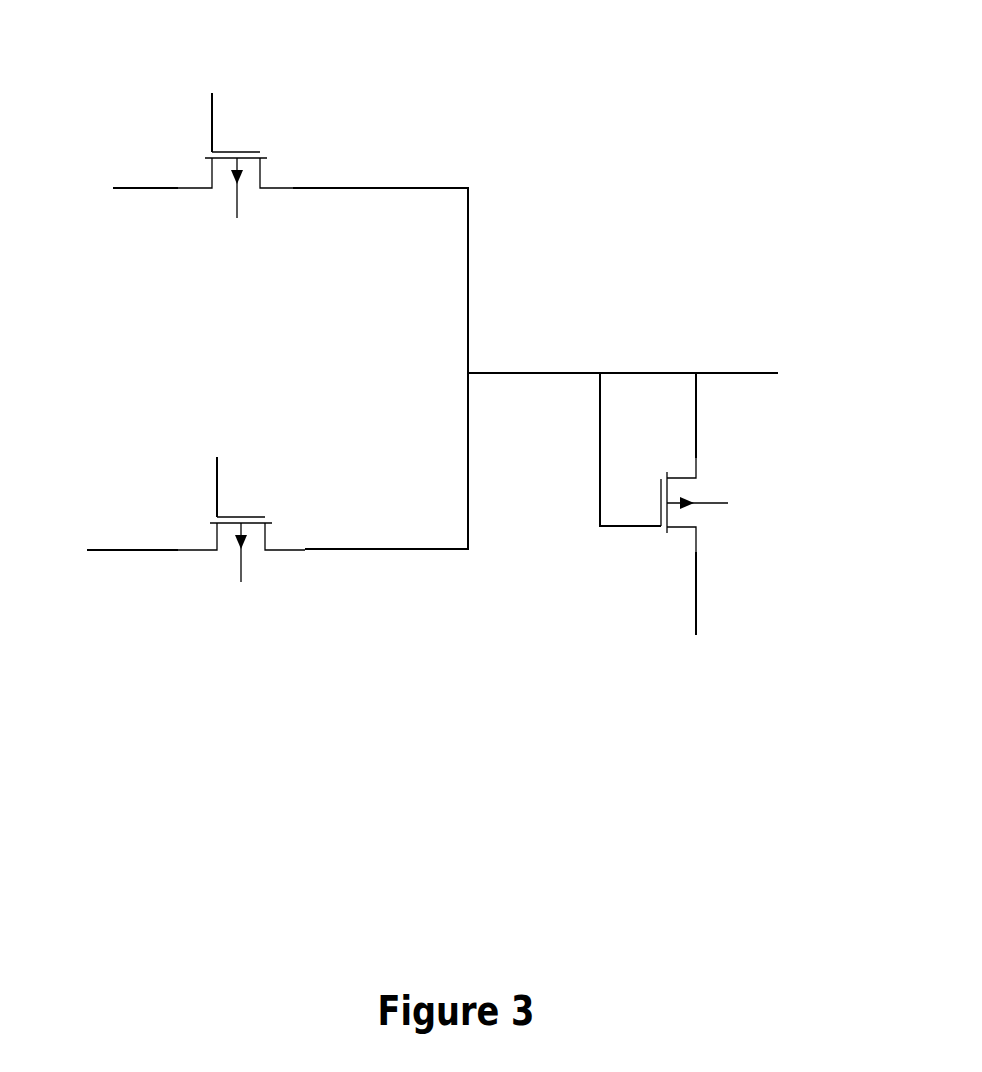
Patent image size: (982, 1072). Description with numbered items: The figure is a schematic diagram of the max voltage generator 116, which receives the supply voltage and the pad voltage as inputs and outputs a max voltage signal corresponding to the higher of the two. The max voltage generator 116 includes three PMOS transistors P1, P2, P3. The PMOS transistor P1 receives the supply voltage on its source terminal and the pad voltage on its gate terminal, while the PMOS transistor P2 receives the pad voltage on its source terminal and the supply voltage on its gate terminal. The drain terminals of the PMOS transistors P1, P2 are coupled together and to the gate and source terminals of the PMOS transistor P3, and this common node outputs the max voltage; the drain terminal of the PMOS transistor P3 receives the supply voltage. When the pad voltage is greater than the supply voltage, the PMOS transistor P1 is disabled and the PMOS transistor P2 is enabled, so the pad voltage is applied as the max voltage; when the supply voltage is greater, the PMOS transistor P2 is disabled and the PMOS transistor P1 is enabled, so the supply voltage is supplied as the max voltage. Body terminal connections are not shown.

The max voltage generator 116 is at (508, 104).
The PMOS transistor P1 is at (235, 170).
The PMOS transistor P2 is at (241, 534).
The PMOS transistor P3 is at (680, 499).